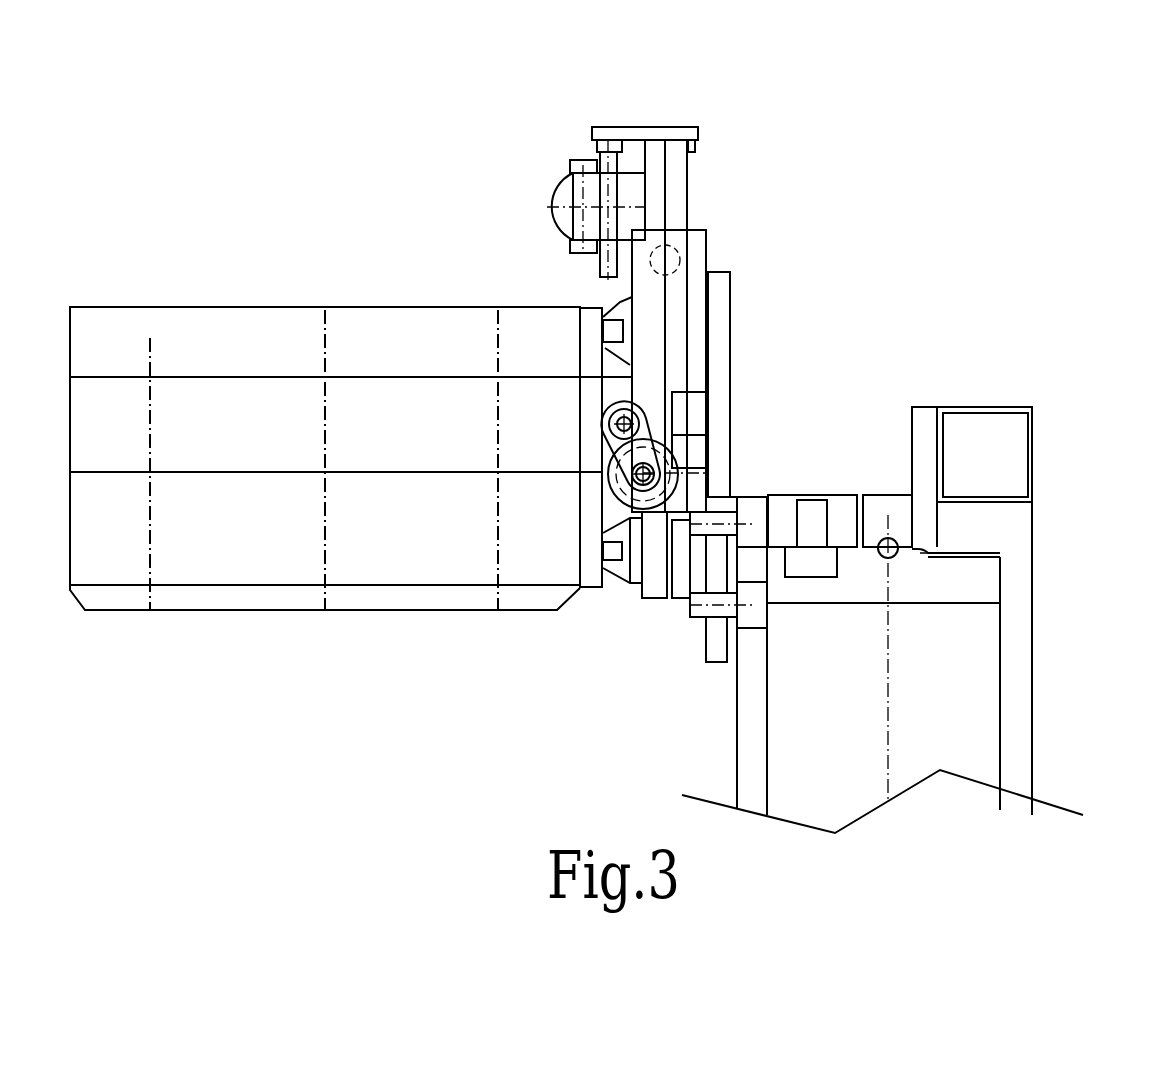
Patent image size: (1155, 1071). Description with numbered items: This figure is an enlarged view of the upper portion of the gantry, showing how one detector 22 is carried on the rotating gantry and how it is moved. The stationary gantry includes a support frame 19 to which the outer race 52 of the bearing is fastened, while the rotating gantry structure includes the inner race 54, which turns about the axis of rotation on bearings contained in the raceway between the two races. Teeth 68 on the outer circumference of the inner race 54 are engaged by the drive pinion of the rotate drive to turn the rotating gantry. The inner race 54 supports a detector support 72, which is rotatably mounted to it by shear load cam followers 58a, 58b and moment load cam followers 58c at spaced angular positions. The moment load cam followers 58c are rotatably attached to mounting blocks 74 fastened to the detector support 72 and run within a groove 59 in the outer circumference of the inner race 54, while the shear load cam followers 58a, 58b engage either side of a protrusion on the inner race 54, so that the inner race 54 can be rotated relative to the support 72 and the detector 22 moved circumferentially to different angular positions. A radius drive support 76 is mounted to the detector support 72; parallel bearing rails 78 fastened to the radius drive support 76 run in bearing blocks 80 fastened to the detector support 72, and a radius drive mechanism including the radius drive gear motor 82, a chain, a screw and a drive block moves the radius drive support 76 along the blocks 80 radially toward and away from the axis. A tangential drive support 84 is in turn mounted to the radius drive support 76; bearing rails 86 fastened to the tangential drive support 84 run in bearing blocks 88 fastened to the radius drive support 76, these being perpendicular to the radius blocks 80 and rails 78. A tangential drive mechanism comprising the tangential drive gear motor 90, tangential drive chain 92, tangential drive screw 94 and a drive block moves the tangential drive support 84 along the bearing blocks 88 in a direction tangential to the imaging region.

The support frame 19 is at (928, 508).
The detector 22 is at (413, 545).
The outer race 52 is at (900, 518).
The inner race 54 is at (920, 582).
The shear load cam follower 58a is at (753, 524).
The shear load cam follower 58b is at (750, 605).
The moment load cam follower 58c is at (810, 572).
The groove 59 is at (838, 562).
The teeth 68 is at (983, 553).
The detector support 72 is at (722, 468).
The mounting block 74 is at (840, 515).
The radius drive support 76 is at (656, 160).
The bearing rail 78 is at (688, 404).
The bearing block 80 is at (680, 184).
The radius drive gear motor 82 is at (595, 192).
The tangential drive support 84 is at (590, 373).
The bearing rail 86 is at (685, 133).
The bearing block 88 is at (620, 310).
The tangential drive gear motor 90 is at (663, 460).
The tangential drive chain 92 is at (625, 483).
The tangential drive screw 94 is at (608, 428).